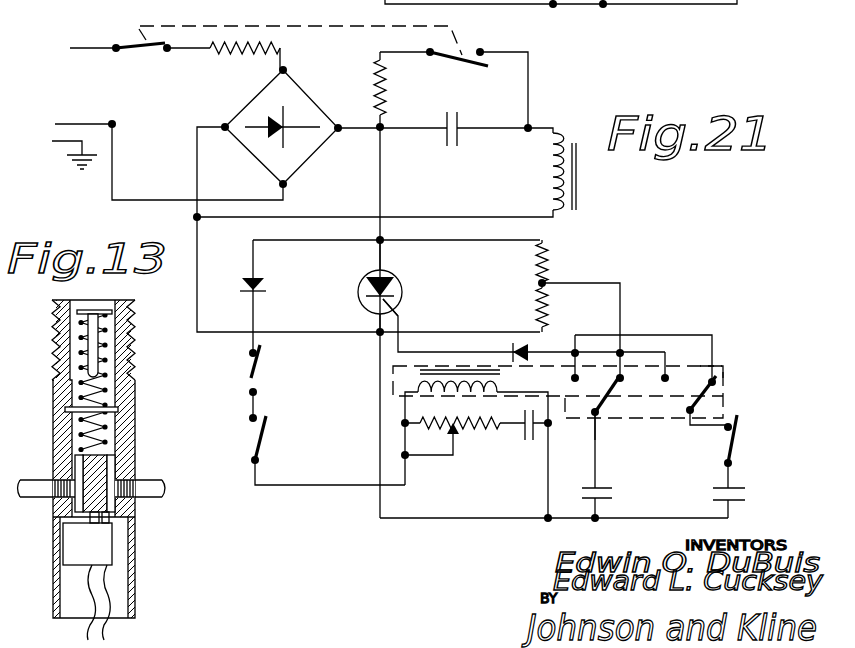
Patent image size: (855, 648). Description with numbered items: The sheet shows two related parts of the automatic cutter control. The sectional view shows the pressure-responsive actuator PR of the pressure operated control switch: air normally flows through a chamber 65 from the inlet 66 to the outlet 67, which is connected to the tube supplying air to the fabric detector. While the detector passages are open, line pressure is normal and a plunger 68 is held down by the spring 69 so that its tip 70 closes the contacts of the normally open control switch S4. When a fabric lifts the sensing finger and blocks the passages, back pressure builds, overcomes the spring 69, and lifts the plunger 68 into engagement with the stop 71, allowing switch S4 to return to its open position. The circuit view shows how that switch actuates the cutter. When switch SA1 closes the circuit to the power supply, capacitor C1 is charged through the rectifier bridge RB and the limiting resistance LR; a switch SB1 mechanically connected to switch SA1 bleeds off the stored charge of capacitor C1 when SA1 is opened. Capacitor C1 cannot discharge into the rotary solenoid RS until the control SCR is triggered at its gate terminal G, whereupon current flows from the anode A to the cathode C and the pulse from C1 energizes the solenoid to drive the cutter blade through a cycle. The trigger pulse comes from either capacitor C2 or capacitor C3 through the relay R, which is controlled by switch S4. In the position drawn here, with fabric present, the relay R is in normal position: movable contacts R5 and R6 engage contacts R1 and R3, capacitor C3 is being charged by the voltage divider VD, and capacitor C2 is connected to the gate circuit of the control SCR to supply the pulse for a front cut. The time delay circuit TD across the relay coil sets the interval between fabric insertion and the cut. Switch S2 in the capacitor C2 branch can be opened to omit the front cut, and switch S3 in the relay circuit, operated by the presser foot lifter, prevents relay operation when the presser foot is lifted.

In FIG. 21, the switch SA1 is at (147, 50).
In FIG. 21, the limiting resistance LR is at (245, 62).
In FIG. 21, the rectifier bridge RB is at (330, 103).
In FIG. 21, the switch SB1 is at (476, 68).
In FIG. 21, the capacitor C1 is at (450, 157).
In FIG. 21, the rotary solenoid RS is at (584, 190).
In FIG. 21, the control SCR is at (410, 288).
In FIG. 21, the anode A is at (380, 252).
In FIG. 21, the cathode C is at (380, 315).
In FIG. 21, the gate terminal G is at (395, 312).
In FIG. 21, the voltage divider VD is at (561, 275).
In FIG. 21, the switch S3 is at (262, 368).
In FIG. 21, the control switch S4 is at (263, 445).
In FIG. 13, the control switch S4 is at (98, 552).
In FIG. 21, the time delay circuit TD is at (476, 457).
In FIG. 21, the relay contact R3 is at (612, 383).
In FIG. 21, the movable relay contact R6 is at (600, 402).
In FIG. 21, the capacitor C3 is at (616, 495).
In FIG. 21, the relay R is at (725, 368).
In FIG. 21, the relay contact R1 is at (716, 384).
In FIG. 21, the movable relay contact R5 is at (695, 403).
In FIG. 21, the switch S2 is at (740, 432).
In FIG. 21, the capacitor C2 is at (752, 495).
In FIG. 13, the spring 69 is at (107, 388).
In FIG. 13, the stop 71 is at (110, 410).
In FIG. 13, the pressure-responsive actuator PR is at (139, 436).
In FIG. 13, the plunger 68 is at (73, 467).
In FIG. 13, the chamber 65 is at (110, 470).
In FIG. 13, the outlet 67 is at (140, 497).
In FIG. 13, the inlet 66 is at (40, 490).
In FIG. 13, the tip 70 is at (101, 516).